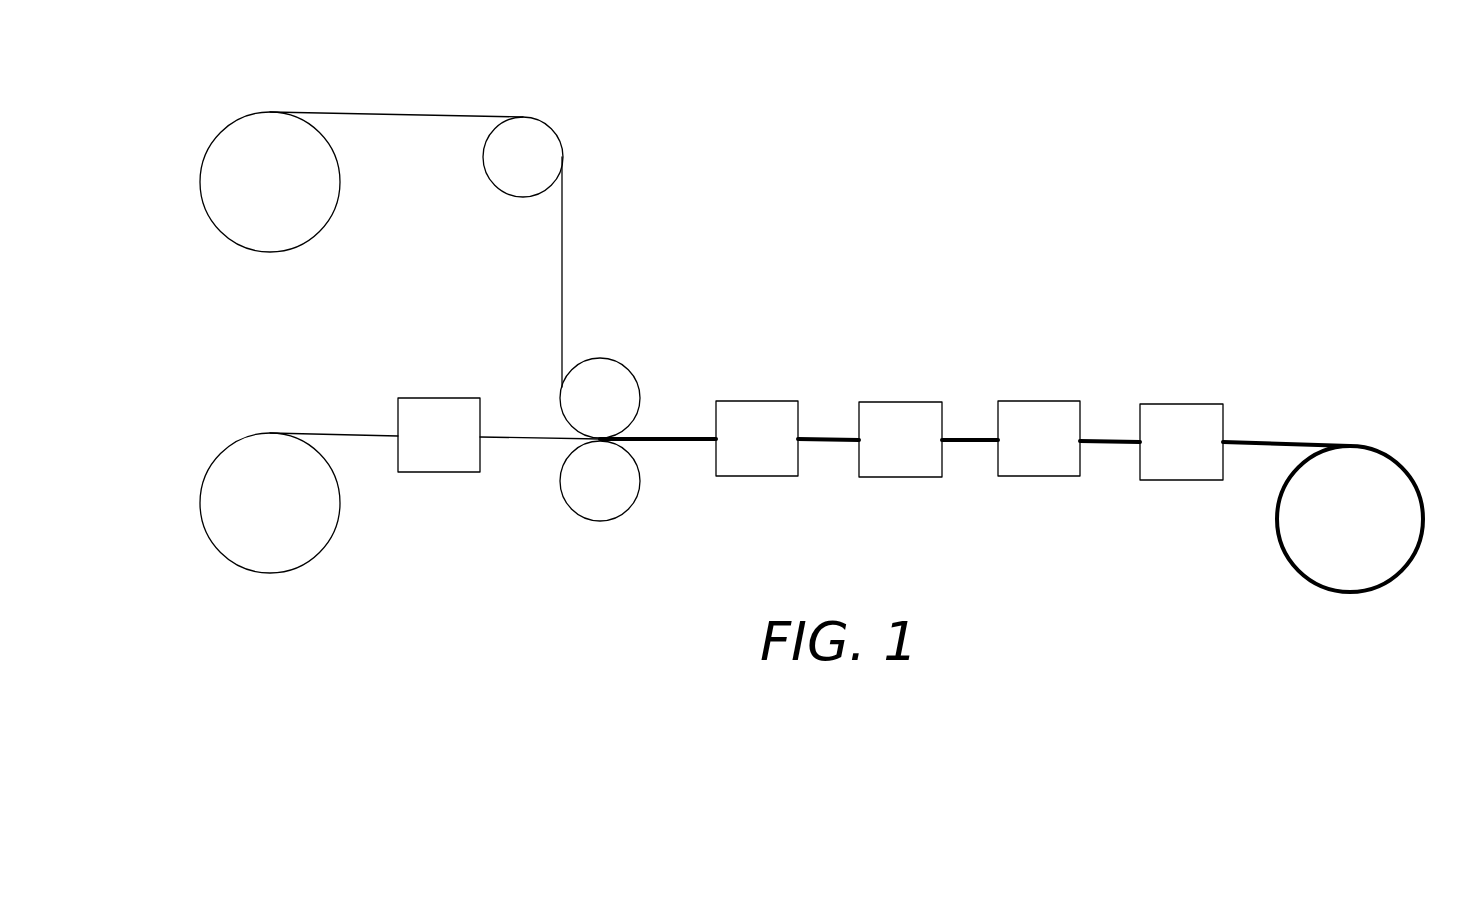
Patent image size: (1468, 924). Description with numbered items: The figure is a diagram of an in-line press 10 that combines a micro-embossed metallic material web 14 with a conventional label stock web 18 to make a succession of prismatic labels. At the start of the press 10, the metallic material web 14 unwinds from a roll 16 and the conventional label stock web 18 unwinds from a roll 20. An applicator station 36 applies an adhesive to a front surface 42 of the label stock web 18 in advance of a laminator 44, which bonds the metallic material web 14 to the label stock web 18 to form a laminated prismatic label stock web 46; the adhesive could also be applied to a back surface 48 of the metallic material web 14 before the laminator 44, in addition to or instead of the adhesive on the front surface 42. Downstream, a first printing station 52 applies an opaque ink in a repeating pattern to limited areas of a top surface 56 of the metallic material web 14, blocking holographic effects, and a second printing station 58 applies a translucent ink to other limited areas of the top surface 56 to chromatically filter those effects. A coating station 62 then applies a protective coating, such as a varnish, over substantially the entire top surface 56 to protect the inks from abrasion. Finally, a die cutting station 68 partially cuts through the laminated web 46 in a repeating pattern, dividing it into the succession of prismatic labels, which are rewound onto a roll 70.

The in-line press 10 is at (678, 130).
The micro-embossed metallic material web 14 is at (397, 112).
The roll 16 is at (207, 150).
The conventional label stock web 18 is at (338, 432).
The roll 20 is at (220, 462).
The applicator station 36 is at (456, 447).
The front surface 42 is at (520, 436).
The laminator 44 is at (636, 368).
The laminated prismatic label stock web 46 is at (660, 446).
The back surface 48 is at (562, 250).
The first printing station 52 is at (771, 457).
The top surface 56 is at (822, 436).
The second printing station 58 is at (915, 463).
The coating station 62 is at (1057, 456).
The die cutting station 68 is at (1197, 458).
The roll 70 is at (1396, 460).